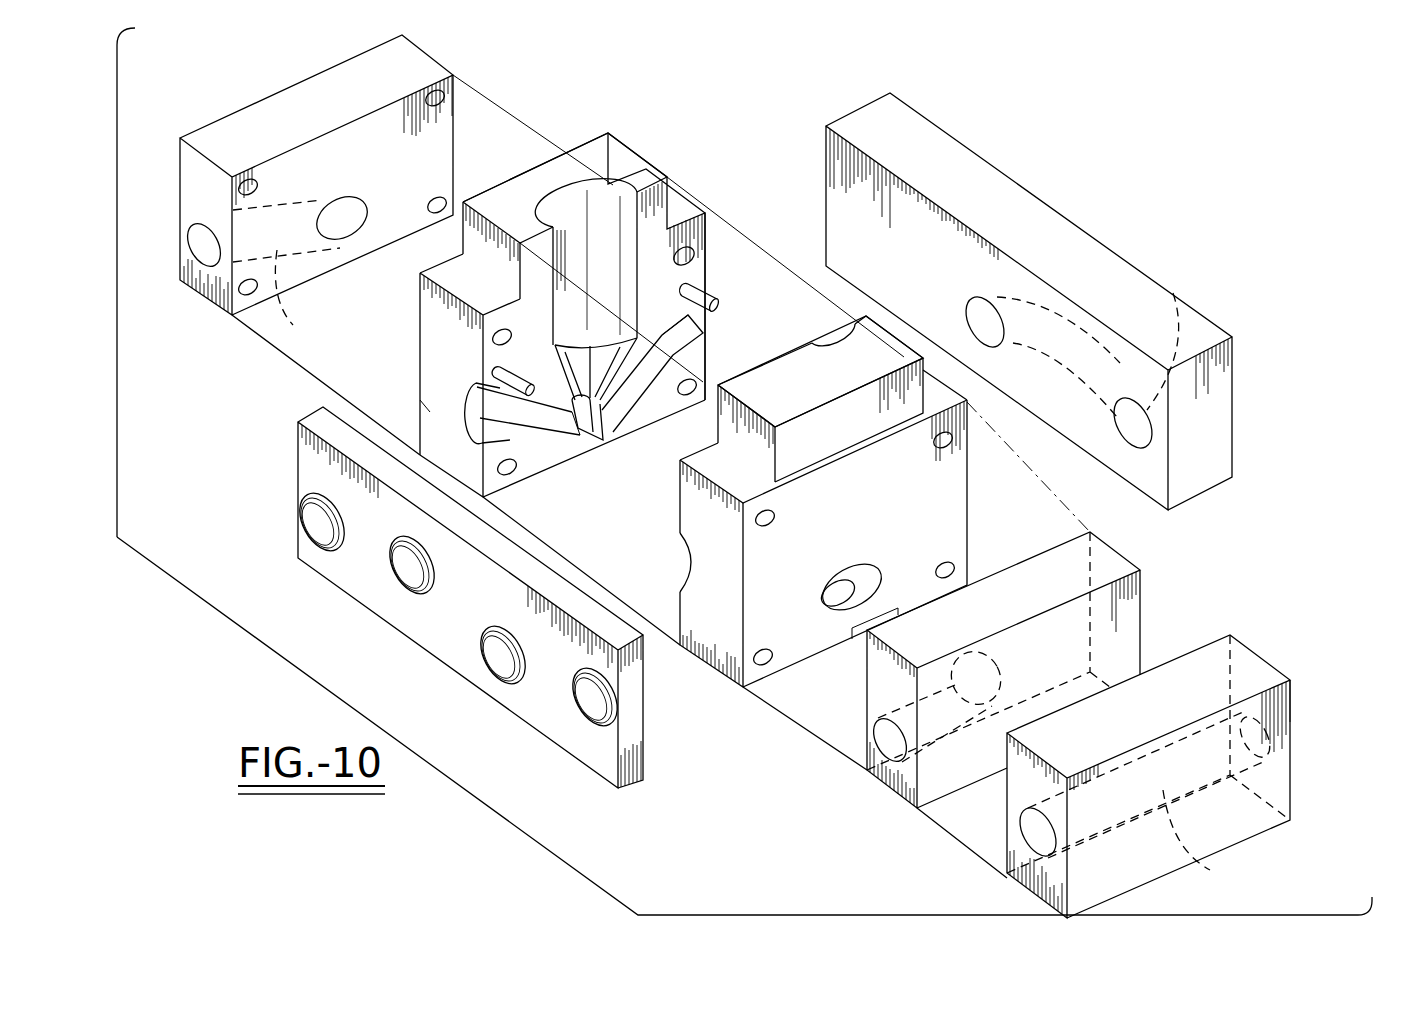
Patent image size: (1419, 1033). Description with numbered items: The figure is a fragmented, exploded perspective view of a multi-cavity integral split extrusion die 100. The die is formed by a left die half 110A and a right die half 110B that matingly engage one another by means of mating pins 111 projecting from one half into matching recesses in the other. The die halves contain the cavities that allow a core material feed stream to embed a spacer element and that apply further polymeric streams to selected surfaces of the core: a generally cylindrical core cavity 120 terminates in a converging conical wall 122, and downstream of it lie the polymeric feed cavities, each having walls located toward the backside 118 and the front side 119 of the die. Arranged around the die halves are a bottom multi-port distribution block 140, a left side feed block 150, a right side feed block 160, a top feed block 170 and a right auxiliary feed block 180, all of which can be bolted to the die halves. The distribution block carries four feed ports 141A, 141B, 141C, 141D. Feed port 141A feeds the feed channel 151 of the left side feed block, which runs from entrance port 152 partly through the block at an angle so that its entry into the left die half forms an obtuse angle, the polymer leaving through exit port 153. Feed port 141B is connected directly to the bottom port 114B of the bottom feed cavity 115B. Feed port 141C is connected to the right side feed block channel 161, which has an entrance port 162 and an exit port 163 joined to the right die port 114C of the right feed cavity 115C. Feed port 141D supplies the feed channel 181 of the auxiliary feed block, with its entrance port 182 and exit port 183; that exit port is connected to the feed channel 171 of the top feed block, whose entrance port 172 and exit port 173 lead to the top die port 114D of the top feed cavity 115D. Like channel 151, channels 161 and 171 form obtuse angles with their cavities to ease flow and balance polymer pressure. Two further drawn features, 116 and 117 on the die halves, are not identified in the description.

The multi-cavity extrusion die 100 is at (1149, 136).
The left die half 110A is at (620, 134).
The right die half 110B is at (679, 508).
The mating pins 111 is at (712, 300).
The bottom port 114B is at (478, 418).
The right die port 114C is at (876, 568).
The top die port 114D is at (688, 340).
The bottom feed cavity 115B is at (538, 428).
The right feed cavity 115C is at (851, 577).
The top feed cavity 115D is at (636, 388).
The side face 116 is at (708, 267).
The notch 117 is at (430, 410).
The backside 118 is at (640, 168).
The front side 119 is at (612, 424).
The core cavity 120 is at (568, 208).
The converging conical wall 122 is at (606, 372).
The bottom multi-port distribution block 140 is at (296, 476).
The feed port 141A is at (308, 526).
The feed port 141B is at (412, 585).
The feed port 141C is at (501, 675).
The feed port 141D is at (596, 722).
The left side feed block 150 is at (274, 96).
The feed channel 151 is at (284, 318).
The entrance port 152 is at (208, 252).
The exit port 153 is at (343, 224).
The right side feed block 160 is at (1124, 554).
The right side feed block channel 161 is at (816, 738).
The entrance port 162 is at (893, 756).
The exit port 163 is at (855, 680).
The top feed block 170 is at (1074, 216).
The feed channel 171 is at (1172, 293).
The entrance port 172 is at (1134, 428).
The exit port 173 is at (978, 300).
The right auxiliary feed block 180 is at (1262, 651).
The feed channel 181 is at (1210, 868).
The entrance port 182 is at (1036, 842).
The exit port 183 is at (1268, 733).